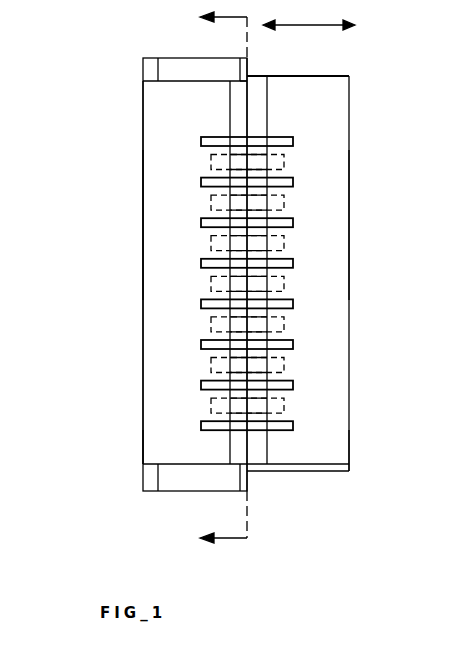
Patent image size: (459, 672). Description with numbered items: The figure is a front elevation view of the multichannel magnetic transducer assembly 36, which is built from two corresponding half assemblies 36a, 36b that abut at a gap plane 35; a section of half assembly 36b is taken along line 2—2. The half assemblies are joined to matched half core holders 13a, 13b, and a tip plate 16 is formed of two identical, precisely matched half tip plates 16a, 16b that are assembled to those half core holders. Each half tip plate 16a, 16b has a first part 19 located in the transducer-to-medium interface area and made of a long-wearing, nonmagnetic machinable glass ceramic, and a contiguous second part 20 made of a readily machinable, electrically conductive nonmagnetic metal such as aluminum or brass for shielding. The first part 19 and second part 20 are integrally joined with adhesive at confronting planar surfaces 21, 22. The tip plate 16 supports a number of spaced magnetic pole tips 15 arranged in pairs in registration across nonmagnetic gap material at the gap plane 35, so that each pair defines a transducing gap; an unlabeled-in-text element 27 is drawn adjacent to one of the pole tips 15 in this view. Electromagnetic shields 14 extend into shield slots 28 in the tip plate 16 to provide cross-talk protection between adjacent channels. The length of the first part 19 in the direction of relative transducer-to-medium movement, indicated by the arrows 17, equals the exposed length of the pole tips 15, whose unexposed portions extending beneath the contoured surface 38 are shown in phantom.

The multichannel transducer assembly 36 is at (120, 58).
The contoured surface 38 is at (155, 137).
The half assembly 36b is at (188, 186).
The half assembly 36a is at (337, 186).
The half core holder 13b is at (143, 212).
The half core holder 13a is at (349, 211).
The gap plane 35 is at (247, 96).
The confronting planar surface 21 is at (305, 270).
The confronting planar surface 22 is at (267, 117).
The second part 20 is at (174, 387).
The electromagnetic shield 14 is at (290, 303).
The shield slot 28 is at (295, 303).
The magnetic pole tip 15 is at (215, 328).
The contact element 27 is at (210, 320).
The first part 19 is at (238, 88).
The tip plate 16 is at (318, 85).
The half tip plate 16b is at (150, 440).
The half tip plate 16a is at (345, 442).
The direction of relative transducer-to-medium movement 17 is at (326, 27).
The section line 2- 2 is at (216, 279).